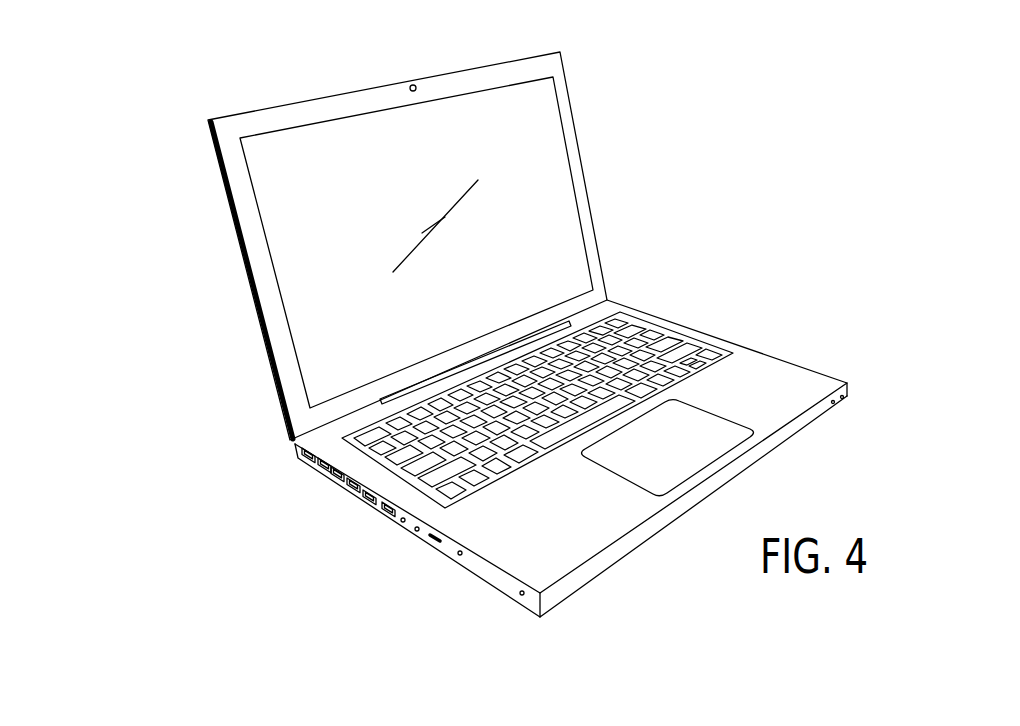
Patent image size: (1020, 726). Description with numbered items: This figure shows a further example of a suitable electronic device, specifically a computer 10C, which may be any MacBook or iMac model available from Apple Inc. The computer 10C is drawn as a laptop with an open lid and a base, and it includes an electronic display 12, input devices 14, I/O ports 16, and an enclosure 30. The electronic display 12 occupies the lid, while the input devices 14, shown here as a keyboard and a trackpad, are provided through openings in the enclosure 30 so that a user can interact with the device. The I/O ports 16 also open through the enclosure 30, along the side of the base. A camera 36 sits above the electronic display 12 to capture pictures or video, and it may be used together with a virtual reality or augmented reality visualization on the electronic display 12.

The computer 10C is at (188, 204).
The electronic display 12 is at (518, 193).
The input devices 14 is at (666, 338).
The I/O ports 16 is at (320, 474).
The enclosure 30 is at (807, 366).
The camera 36 is at (411, 85).